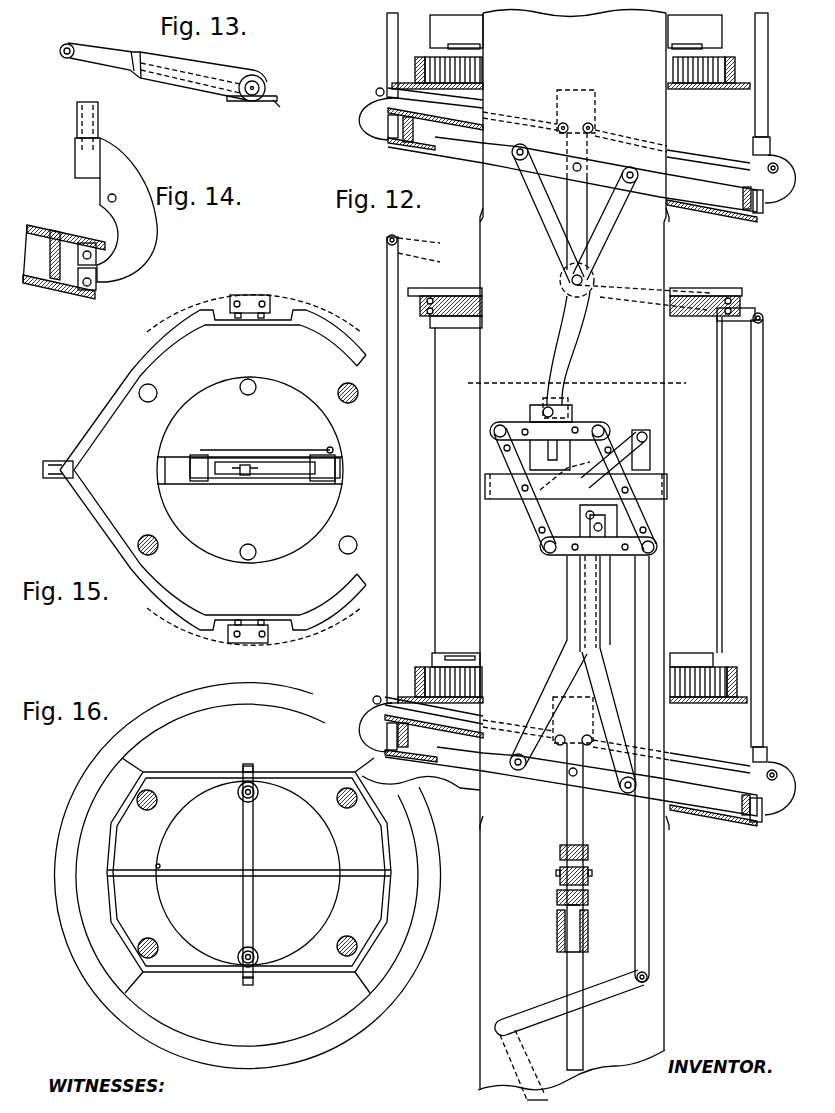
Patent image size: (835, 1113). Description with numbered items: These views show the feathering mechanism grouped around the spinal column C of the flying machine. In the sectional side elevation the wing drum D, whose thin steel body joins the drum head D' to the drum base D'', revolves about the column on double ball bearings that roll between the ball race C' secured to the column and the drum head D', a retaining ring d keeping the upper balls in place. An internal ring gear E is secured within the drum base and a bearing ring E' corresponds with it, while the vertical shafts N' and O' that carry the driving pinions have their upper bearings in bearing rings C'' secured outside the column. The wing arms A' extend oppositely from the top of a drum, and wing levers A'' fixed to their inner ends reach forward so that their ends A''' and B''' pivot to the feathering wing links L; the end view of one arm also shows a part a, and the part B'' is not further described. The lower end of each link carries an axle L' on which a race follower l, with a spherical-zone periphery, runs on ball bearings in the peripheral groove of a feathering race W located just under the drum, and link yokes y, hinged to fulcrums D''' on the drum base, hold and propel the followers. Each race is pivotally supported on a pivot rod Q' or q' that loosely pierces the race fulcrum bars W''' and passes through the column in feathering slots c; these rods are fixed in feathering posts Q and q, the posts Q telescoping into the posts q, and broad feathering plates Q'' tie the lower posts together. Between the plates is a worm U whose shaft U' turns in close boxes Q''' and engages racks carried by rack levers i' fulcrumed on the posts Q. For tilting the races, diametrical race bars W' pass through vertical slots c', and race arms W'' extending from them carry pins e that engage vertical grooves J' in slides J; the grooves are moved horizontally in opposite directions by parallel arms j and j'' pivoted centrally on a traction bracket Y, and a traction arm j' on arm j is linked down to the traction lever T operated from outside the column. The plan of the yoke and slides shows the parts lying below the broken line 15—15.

In FIG. 13, the wing lever end A''' is at (56, 41).
In FIG. 13, the wing lever A'' is at (160, 62).
In FIG. 13, the wing arm A' is at (262, 78).
In FIG. 13, the bearing bracket a is at (259, 107).
In FIG. 12, the feathering wing link L is at (575, 387).
In FIG. 14, the link axle L' is at (116, 192).
In FIG. 12, the link axle L' is at (576, 456).
In FIG. 14, the race follower l is at (97, 285).
In FIG. 12, the race follower l is at (388, 135).
In FIG. 14, the feathering race W is at (64, 269).
In FIG. 12, the feathering race W is at (571, 477).
In FIG. 16, the feathering race W is at (248, 876).
In FIG. 12, the race bar W' is at (571, 476).
In FIG. 16, the race bar W' is at (249, 882).
In FIG. 12, the race arm W'' is at (572, 468).
In FIG. 16, the race fulcrum bar W''' is at (249, 875).
In FIG. 12, the wing drum D is at (456, 334).
In FIG. 12, the drum head D' is at (456, 334).
In FIG. 12, the drum base D'' is at (456, 648).
In FIG. 12, the fulcrum D''' is at (576, 111).
In FIG. 15, the fulcrum D''' is at (250, 468).
In FIG. 12, the spinal column C is at (572, 550).
In FIG. 15, the spinal column C is at (250, 470).
In FIG. 16, the spinal column C is at (248, 873).
In FIG. 12, the ball race C' is at (445, 290).
In FIG. 16, the ball race C' is at (239, 867).
In FIG. 12, the bearing ring C'' is at (695, 341).
In FIG. 12, the vertical slot c' is at (578, 508).
In FIG. 16, the feathering slot c is at (244, 873).
In FIG. 12, the internal ring gear E is at (576, 391).
In FIG. 12, the bearing ring E' is at (571, 436).
In FIG. 12, the link yoke y is at (475, 112).
In FIG. 15, the link yoke y is at (88, 430).
In FIG. 12, the upper feathering post q is at (574, 439).
In FIG. 15, the upper feathering post q is at (256, 469).
In FIG. 12, the pivot rod q' is at (559, 179).
In FIG. 16, the lower feathering post Q is at (246, 874).
In FIG. 12, the pivot rod Q' is at (553, 789).
In FIG. 16, the pivot rod Q' is at (262, 872).
In FIG. 12, the feathering plate Q'' is at (572, 928).
In FIG. 12, the close box Q''' is at (579, 873).
In FIG. 12, the worm U is at (586, 880).
In FIG. 12, the worm shaft U' is at (588, 906).
In FIG. 12, the link B'' is at (584, 271).
In FIG. 12, the wing lever end B''' is at (783, 320).
In FIG. 12, the retaining ring d is at (727, 290).
In FIG. 12, the section line 15 is at (578, 385).
In FIG. 12, the pin e is at (542, 412).
In FIG. 12, the slide J is at (573, 489).
In FIG. 15, the slide J is at (265, 482).
In FIG. 12, the vertical groove J' is at (611, 481).
In FIG. 15, the vertical groove J' is at (245, 486).
In FIG. 12, the parallel arm j is at (525, 489).
In FIG. 15, the parallel arm j is at (194, 454).
In FIG. 12, the traction arm j' is at (624, 472).
In FIG. 15, the traction arm j' is at (265, 437).
In FIG. 12, the parallel arm j'' is at (595, 460).
In FIG. 15, the parallel arm j'' is at (322, 469).
In FIG. 12, the traction bracket Y is at (576, 487).
In FIG. 15, the traction bracket Y is at (295, 490).
In FIG. 12, the rack lever i' is at (648, 769).
In FIG. 15, the rack lever i' is at (325, 439).
In FIG. 12, the traction lever T is at (608, 992).
In FIG. 15, the vertical shaft O' is at (255, 460).
In FIG. 16, the vertical shaft O' is at (247, 867).
In FIG. 15, the vertical shaft N' is at (248, 469).
In FIG. 16, the vertical shaft N' is at (249, 875).